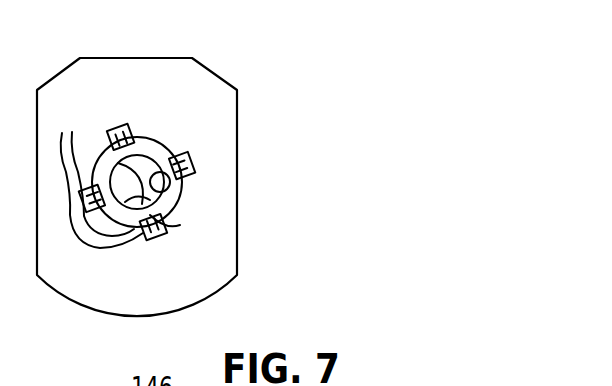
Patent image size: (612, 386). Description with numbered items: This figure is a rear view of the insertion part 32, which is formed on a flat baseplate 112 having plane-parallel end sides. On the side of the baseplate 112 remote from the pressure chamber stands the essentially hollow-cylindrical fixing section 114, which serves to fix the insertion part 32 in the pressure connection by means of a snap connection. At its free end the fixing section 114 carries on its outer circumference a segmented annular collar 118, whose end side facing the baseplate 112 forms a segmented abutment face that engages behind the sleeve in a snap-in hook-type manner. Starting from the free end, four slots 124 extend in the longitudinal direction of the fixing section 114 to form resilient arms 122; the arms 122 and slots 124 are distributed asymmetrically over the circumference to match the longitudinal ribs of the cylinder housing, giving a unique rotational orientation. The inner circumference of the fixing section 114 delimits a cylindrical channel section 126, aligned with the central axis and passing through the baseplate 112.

The insertion part 32 is at (240, 64).
The baseplate 112 is at (170, 297).
The fixing section 114 is at (137, 120).
The segmented annular collar 118 is at (203, 165).
The resilient arms 122 is at (128, 131).
The slots 124 is at (148, 226).
The cylindrical channel section 126 is at (158, 182).